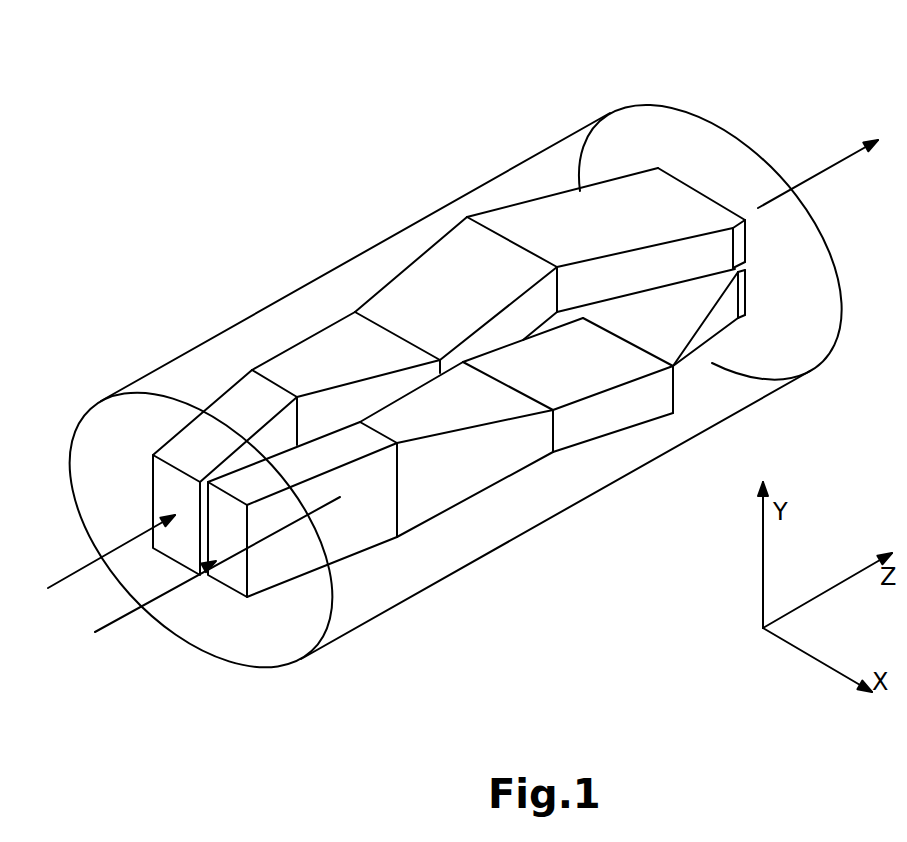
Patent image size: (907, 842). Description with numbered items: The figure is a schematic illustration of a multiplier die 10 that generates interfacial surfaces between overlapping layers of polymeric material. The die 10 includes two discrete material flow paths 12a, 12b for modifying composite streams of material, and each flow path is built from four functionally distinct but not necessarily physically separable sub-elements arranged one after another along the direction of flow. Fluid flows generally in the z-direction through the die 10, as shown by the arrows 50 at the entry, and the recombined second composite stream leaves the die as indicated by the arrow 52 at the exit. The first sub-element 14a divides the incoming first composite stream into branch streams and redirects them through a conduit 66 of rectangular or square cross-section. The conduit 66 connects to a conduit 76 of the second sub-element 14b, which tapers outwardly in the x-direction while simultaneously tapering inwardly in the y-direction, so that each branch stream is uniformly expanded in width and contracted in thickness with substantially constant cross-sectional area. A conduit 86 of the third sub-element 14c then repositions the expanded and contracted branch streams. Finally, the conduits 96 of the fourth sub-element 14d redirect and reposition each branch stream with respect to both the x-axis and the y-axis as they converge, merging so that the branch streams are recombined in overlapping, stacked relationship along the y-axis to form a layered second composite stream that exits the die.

The multiplier die 10 is at (298, 148).
The material flow path 12a is at (233, 362).
The material flow path 12b is at (430, 545).
The first sub-element 14a is at (170, 442).
The second sub-element 14b is at (320, 343).
The third sub-element 14c is at (453, 262).
The fourth sub-element 14d is at (565, 212).
The arrows 50 is at (68, 578).
The arrow 52 is at (835, 162).
The conduit 66 is at (212, 425).
The conduit 76 is at (343, 328).
The conduit 86 is at (412, 280).
The conduit 96 is at (530, 218).